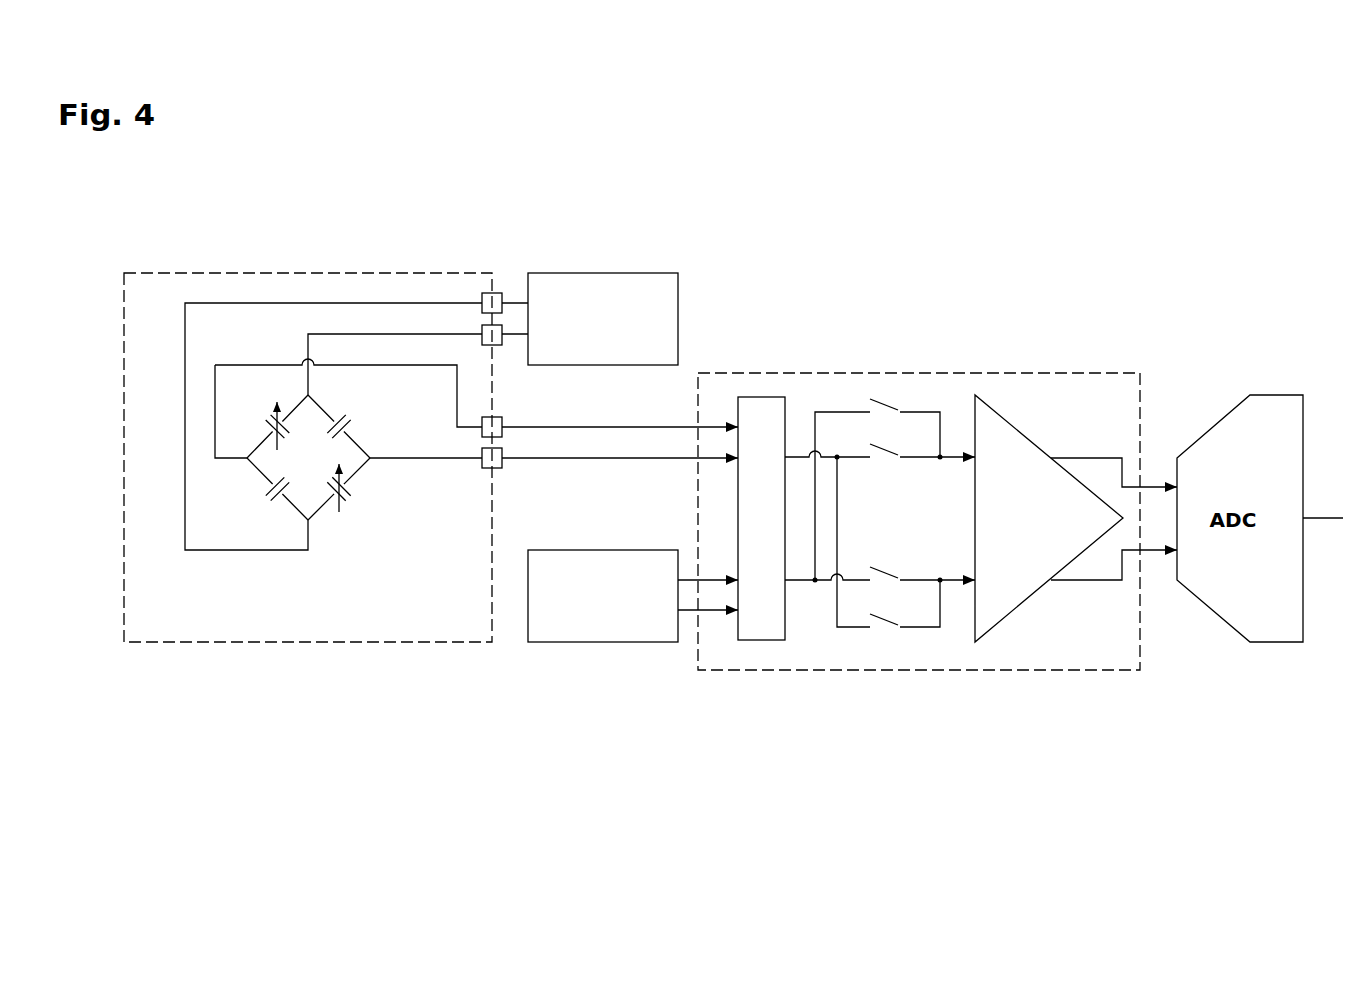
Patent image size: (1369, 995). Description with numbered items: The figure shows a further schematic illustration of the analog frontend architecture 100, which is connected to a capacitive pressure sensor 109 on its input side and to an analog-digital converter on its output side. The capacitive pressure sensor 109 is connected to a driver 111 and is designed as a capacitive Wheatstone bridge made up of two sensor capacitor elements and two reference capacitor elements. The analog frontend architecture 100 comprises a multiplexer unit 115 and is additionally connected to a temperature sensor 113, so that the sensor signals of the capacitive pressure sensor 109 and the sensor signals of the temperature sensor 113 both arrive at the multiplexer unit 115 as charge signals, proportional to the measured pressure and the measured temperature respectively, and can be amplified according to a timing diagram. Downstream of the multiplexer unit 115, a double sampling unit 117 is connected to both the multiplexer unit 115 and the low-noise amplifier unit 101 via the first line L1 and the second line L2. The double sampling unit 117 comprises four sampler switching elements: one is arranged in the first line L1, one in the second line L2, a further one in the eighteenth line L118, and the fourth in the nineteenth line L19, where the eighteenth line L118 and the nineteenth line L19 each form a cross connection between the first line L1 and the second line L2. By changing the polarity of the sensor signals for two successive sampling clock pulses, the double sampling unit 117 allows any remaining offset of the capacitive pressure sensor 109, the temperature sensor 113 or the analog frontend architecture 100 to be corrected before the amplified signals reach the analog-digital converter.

The capacitive pressure sensor 109 is at (297, 273).
The driver 111 is at (617, 273).
The analog frontend architecture 100 is at (977, 265).
The double sampling unit 117 is at (888, 395).
The eighteenth line L118 is at (835, 412).
The first line L1 is at (948, 455).
The temperature sensor 113 is at (617, 642).
The multiplexer unit 115 is at (762, 640).
The nineteenth line L19 is at (833, 603).
The second line L2 is at (948, 583).
The low-noise amplifier unit 101 is at (1008, 615).